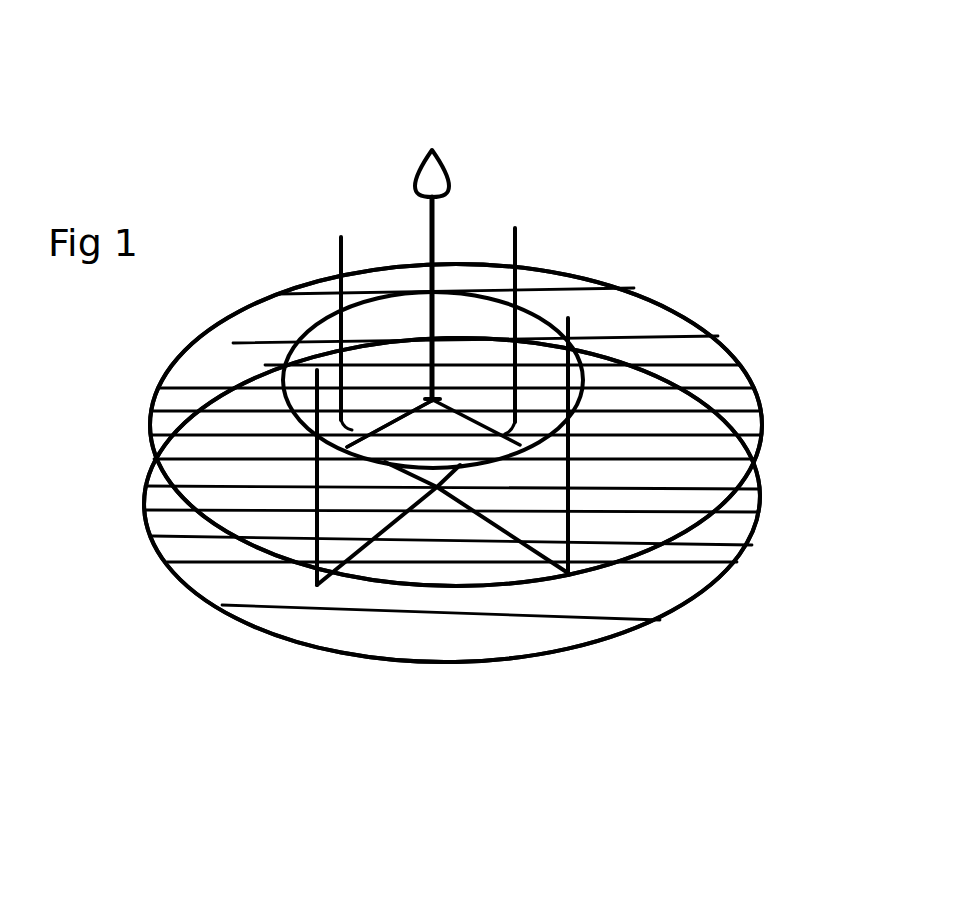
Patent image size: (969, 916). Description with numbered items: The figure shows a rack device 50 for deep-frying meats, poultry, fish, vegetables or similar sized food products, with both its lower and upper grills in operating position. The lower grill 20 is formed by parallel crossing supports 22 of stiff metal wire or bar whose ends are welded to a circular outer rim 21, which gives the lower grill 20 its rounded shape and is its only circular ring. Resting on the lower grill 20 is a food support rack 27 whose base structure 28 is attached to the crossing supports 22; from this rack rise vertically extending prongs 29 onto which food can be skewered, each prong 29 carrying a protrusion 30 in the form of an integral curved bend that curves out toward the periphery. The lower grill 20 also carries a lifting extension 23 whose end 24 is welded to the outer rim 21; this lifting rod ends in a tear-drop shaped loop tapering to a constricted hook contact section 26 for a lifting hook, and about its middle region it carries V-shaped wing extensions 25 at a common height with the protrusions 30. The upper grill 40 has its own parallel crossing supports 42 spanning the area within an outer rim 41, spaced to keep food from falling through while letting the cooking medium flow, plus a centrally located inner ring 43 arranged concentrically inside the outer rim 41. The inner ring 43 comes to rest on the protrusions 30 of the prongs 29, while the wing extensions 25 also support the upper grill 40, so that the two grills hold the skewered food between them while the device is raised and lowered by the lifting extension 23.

The lower grill 20 is at (720, 568).
The outer rim 21 is at (663, 613).
The crossing supports 22 is at (577, 620).
The lifting extension 23 is at (440, 232).
The end 24 is at (424, 395).
The wing extensions 25 is at (467, 268).
The hook contact section 26 is at (447, 155).
The food support rack 27 is at (308, 518).
The base structure 28 is at (370, 535).
The prongs 29 is at (518, 262).
The protrusion 30 is at (520, 336).
The upper grill 40 is at (667, 300).
The outer rim 41 is at (240, 313).
The crossing supports 42 is at (240, 340).
The inner ring 43 is at (338, 365).
The rack device 50 is at (553, 142).